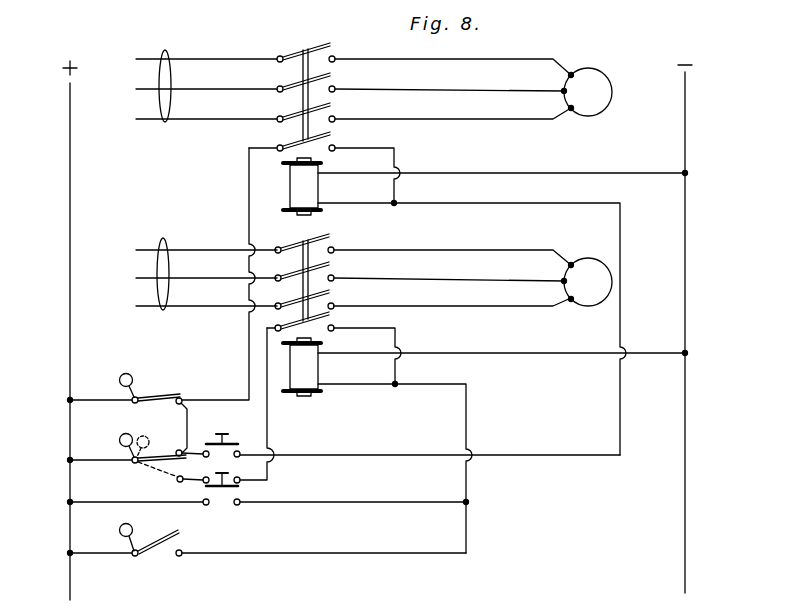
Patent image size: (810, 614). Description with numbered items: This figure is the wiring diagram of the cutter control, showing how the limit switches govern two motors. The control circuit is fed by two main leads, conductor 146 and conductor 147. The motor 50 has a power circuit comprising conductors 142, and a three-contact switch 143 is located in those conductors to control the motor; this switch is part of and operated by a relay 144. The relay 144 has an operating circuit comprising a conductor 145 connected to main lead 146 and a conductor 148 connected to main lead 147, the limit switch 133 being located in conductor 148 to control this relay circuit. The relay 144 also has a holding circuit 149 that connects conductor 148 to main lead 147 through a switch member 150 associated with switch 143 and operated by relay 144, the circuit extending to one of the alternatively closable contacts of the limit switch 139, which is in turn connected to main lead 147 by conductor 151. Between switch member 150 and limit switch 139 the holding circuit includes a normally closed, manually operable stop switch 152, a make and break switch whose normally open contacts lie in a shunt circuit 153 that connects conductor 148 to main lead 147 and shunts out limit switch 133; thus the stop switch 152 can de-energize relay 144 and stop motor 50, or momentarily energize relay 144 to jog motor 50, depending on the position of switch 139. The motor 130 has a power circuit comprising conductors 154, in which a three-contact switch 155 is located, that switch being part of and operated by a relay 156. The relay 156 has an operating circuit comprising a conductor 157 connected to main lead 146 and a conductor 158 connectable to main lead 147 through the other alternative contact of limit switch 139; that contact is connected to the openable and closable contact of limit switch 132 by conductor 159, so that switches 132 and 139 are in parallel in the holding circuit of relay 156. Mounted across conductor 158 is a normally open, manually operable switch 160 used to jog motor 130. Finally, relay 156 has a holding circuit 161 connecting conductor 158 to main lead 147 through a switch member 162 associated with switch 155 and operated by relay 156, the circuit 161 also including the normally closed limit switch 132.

The conductor 147 is at (70, 291).
The conductor 146 is at (688, 290).
The conductors 154 is at (166, 52).
The three-contact switch 155 is at (310, 64).
The motor 130 is at (589, 75).
The switch member 162 is at (322, 141).
The holding circuit 161 is at (396, 161).
The relay 156 is at (298, 178).
The conductor 157 is at (522, 174).
The conductor 158 is at (527, 205).
The conductors 142 is at (165, 240).
The three-contact switch 143 is at (312, 252).
The motor 50 is at (604, 241).
The switch member 150 is at (332, 323).
The holding circuit 149 is at (398, 341).
The relay 144 is at (310, 382).
The conductor 145 is at (540, 355).
The conductor 148 is at (441, 385).
The limit switch 132 is at (145, 393).
The conductor 159 is at (188, 412).
The limit switch 139 is at (172, 433).
The switch 160 is at (238, 452).
The stop switch 152 is at (240, 494).
The conductor 151 is at (93, 462).
The shunt circuit 153 is at (337, 503).
The limit switch 133 is at (160, 555).